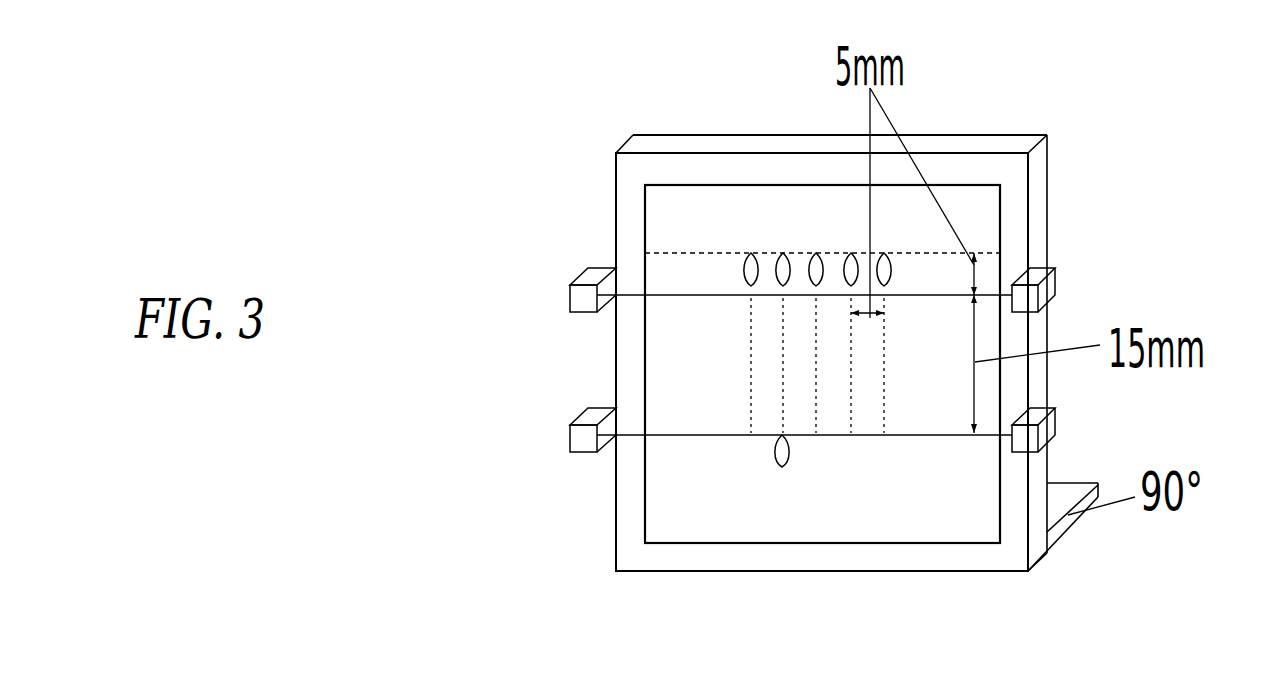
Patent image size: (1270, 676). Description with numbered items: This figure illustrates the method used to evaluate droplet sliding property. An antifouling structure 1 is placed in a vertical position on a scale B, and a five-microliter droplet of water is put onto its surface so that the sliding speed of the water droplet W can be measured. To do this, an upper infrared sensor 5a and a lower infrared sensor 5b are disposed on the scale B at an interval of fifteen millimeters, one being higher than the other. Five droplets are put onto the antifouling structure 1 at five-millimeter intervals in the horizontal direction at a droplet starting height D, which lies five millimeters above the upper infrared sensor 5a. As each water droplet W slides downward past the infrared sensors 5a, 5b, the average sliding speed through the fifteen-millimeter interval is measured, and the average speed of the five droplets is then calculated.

The antifouling structure 1 is at (680, 508).
The infrared sensor 5a is at (582, 302).
The infrared sensor 5b is at (583, 440).
The scale B is at (1017, 200).
The droplet starting height D is at (634, 253).
The water droplet W is at (748, 268).